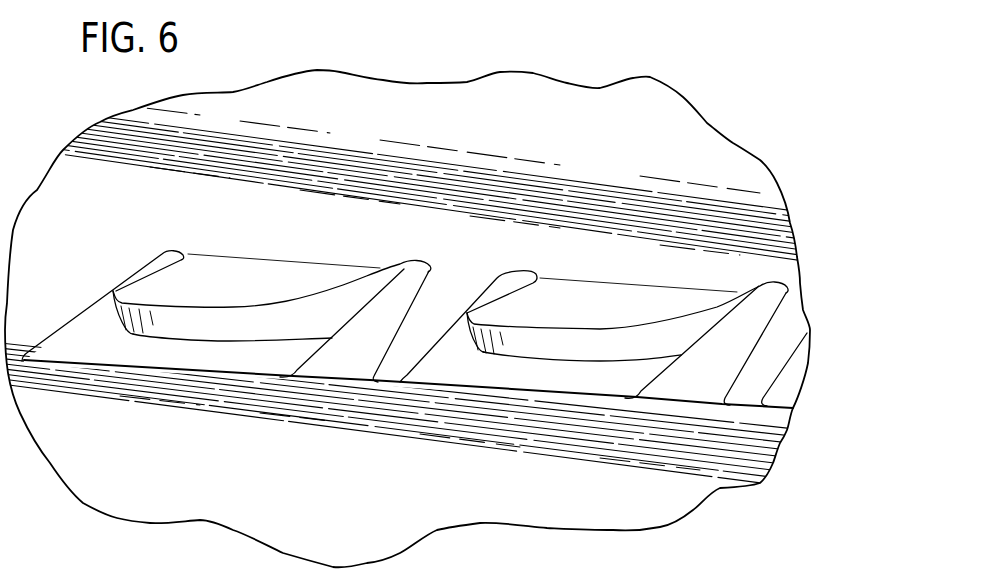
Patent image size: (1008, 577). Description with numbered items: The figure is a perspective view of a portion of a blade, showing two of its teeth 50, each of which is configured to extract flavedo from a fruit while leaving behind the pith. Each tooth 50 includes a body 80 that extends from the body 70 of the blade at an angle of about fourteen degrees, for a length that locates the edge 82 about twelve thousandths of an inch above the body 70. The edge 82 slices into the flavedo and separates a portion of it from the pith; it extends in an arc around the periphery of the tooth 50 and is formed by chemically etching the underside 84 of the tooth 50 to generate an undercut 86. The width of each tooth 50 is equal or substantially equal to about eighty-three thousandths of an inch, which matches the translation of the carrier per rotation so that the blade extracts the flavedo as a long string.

The tooth 50 is at (450, 328).
The body of the blade 70 is at (504, 318).
The body of the tooth 80 is at (450, 336).
The edge 82 is at (450, 261).
The underside of the tooth 84 is at (331, 383).
The undercut 86 is at (407, 404).